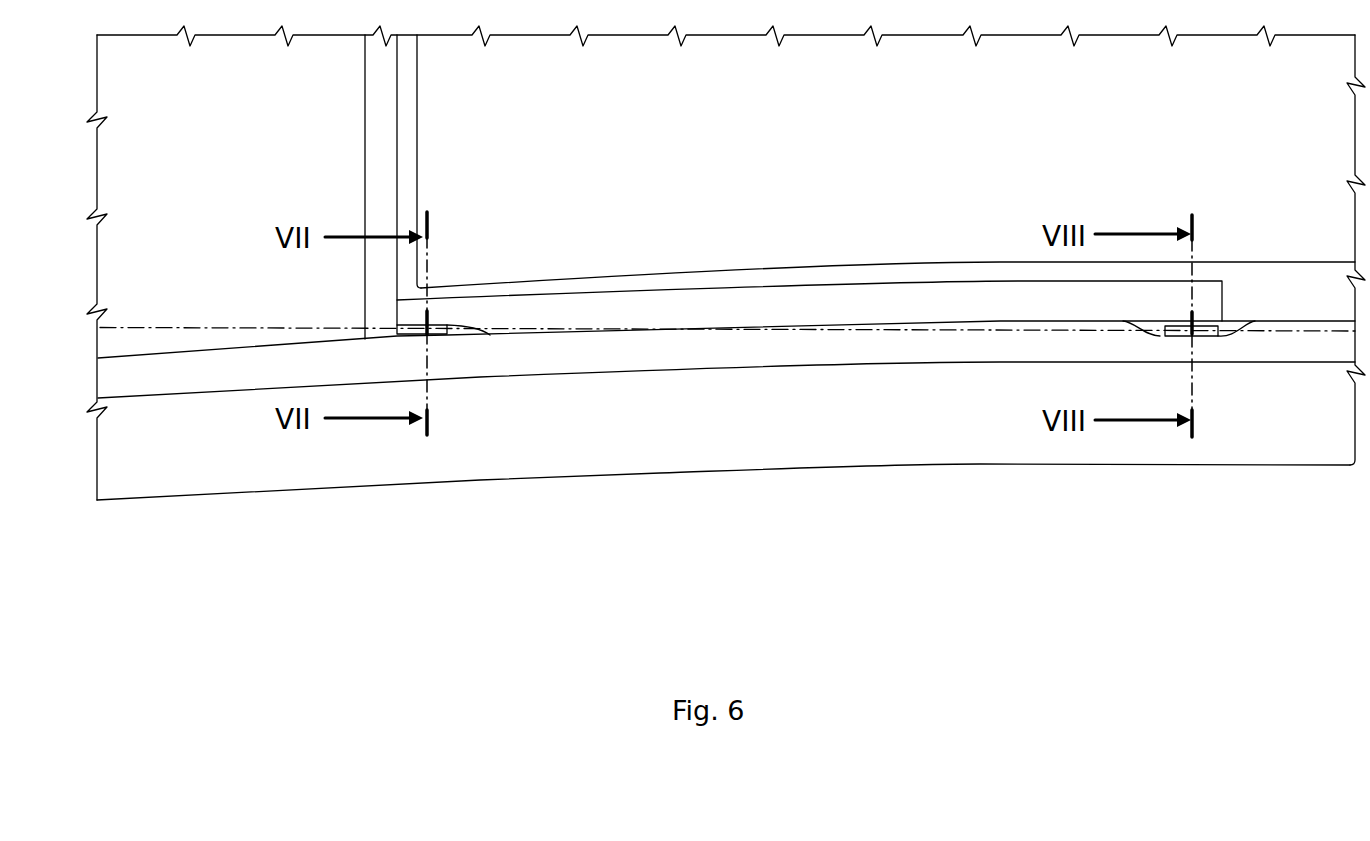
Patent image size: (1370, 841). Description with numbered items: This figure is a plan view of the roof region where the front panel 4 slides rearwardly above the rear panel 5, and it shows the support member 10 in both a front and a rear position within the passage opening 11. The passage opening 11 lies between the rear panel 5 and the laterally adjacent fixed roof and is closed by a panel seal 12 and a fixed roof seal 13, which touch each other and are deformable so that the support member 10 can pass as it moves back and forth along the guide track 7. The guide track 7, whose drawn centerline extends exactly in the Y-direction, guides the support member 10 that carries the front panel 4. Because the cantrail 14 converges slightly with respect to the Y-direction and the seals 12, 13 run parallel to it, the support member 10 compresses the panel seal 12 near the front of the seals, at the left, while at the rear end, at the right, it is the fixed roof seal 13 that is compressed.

The front panel 4 is at (210, 168).
The rear panel 5 is at (835, 153).
The rear guide track 7 is at (1316, 333).
The support member 10 is at (449, 352).
The passage opening 11 is at (918, 321).
The panel seal 12 is at (738, 308).
The fixed roof seal 13 is at (842, 347).
The cantrail 14 is at (1013, 443).